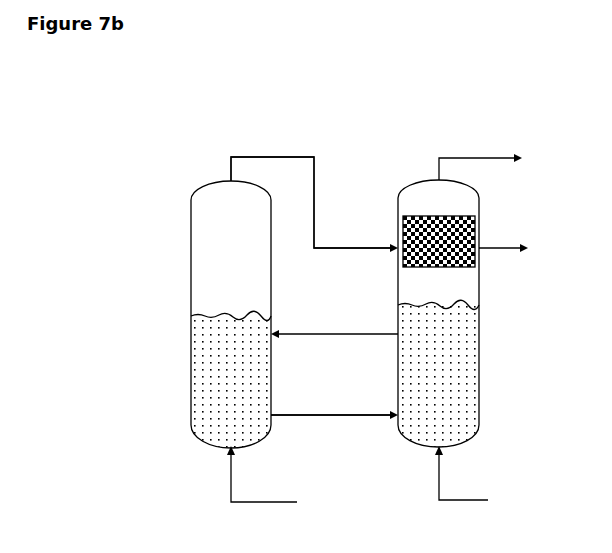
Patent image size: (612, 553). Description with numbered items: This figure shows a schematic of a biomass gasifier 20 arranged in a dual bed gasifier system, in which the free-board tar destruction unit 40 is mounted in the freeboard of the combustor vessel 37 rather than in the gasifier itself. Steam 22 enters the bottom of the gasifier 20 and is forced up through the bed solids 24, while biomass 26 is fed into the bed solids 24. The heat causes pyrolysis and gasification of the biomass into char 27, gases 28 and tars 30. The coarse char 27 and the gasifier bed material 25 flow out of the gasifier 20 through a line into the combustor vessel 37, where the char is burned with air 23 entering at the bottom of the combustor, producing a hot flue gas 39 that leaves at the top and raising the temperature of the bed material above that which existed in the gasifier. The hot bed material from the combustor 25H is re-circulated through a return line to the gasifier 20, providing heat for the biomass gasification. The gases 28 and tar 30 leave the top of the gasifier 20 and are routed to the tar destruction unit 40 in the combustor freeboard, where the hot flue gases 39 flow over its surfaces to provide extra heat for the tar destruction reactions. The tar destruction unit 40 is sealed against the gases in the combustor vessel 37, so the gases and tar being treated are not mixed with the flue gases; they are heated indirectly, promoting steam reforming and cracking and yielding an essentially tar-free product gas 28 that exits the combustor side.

The biomass gasifier 20 is at (173, 228).
The steam 22 is at (279, 480).
The air 23 is at (479, 479).
The bed solids 24 is at (217, 423).
The gasifier bed material 25 is at (334, 404).
The hot bed material from the combustor 25H is at (334, 325).
The biomass 26 is at (185, 331).
The char 27 is at (331, 428).
The gases 28 is at (397, 196).
The tars 30 is at (314, 204).
The combustor vessel 37 is at (480, 287).
The hot flue gas 39 is at (499, 163).
The free-board tar destruction unit 40 is at (463, 225).